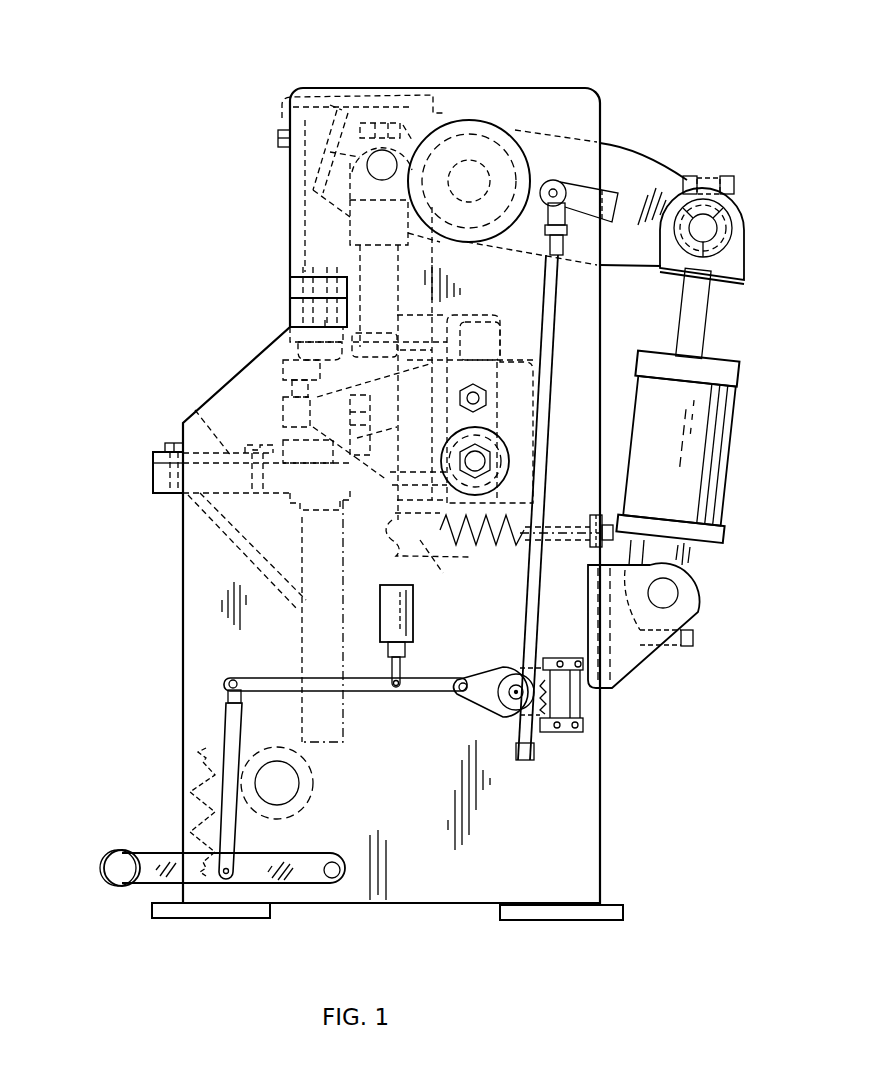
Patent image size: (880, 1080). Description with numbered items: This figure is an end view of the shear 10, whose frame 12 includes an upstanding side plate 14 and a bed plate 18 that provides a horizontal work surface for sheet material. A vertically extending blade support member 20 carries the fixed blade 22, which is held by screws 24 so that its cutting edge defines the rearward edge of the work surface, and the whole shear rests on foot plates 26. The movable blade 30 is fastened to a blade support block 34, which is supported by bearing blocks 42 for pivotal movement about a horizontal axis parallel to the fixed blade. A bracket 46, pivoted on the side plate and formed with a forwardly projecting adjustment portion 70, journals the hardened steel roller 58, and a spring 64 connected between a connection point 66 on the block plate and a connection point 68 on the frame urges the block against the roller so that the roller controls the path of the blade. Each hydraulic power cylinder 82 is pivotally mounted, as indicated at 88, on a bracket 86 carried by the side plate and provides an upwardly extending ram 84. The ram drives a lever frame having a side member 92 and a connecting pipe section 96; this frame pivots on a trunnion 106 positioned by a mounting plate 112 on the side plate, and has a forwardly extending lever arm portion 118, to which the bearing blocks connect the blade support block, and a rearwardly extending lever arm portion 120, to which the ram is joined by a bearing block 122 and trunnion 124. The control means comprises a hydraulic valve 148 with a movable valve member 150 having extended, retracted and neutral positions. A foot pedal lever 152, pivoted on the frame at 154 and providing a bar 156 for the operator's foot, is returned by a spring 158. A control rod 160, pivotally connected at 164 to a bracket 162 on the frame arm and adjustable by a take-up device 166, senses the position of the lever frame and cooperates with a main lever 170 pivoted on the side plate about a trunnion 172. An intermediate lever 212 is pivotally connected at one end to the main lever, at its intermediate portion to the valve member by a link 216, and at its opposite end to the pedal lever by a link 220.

The shear 10 is at (632, 61).
The frame 12 is at (216, 366).
The side plate 14 is at (203, 565).
The bed plate 18 is at (195, 410).
The blade support member 20 is at (346, 594).
The fixed blade 22 is at (197, 517).
The screws 24 is at (303, 520).
The foot plates 26 is at (153, 907).
The movable blade 30 is at (385, 443).
The blade support block 34 is at (398, 290).
The bearing blocks 42 is at (350, 220).
The bracket 46 is at (443, 392).
The roller 58 is at (497, 433).
The spring 64 is at (482, 548).
The connection point 66 is at (428, 555).
The connection point 68 is at (607, 513).
The adjustment portion 70 is at (283, 417).
The hydraulic power cylinder 82 is at (682, 502).
The ram 84 is at (690, 345).
The bracket 86 is at (633, 653).
The pivotal mounting 88 is at (680, 590).
The side member 92 is at (610, 160).
The pipe section 96 is at (490, 133).
The trunnion 106 is at (440, 110).
The mounting plate 112 is at (515, 140).
The lever arm portion 118 is at (408, 87).
The lever arm portion 120 is at (650, 178).
The bearing block 122 is at (730, 264).
The trunnion 124 is at (718, 230).
The hydraulic valve 148 is at (397, 610).
The valve member 150 is at (407, 647).
The foot pedal lever 152 is at (303, 867).
The pivot 154 is at (343, 870).
The bar 156 is at (120, 850).
The spring 158 is at (190, 777).
The control rod 160 is at (548, 355).
The bracket 162 is at (587, 200).
The pivotal connection 164 is at (556, 190).
The take-up device 166 is at (586, 242).
The main lever 170 is at (493, 694).
The trunnion 172 is at (515, 686).
The intermediate lever 212 is at (373, 691).
The link 216 is at (397, 667).
The link 220 is at (232, 727).